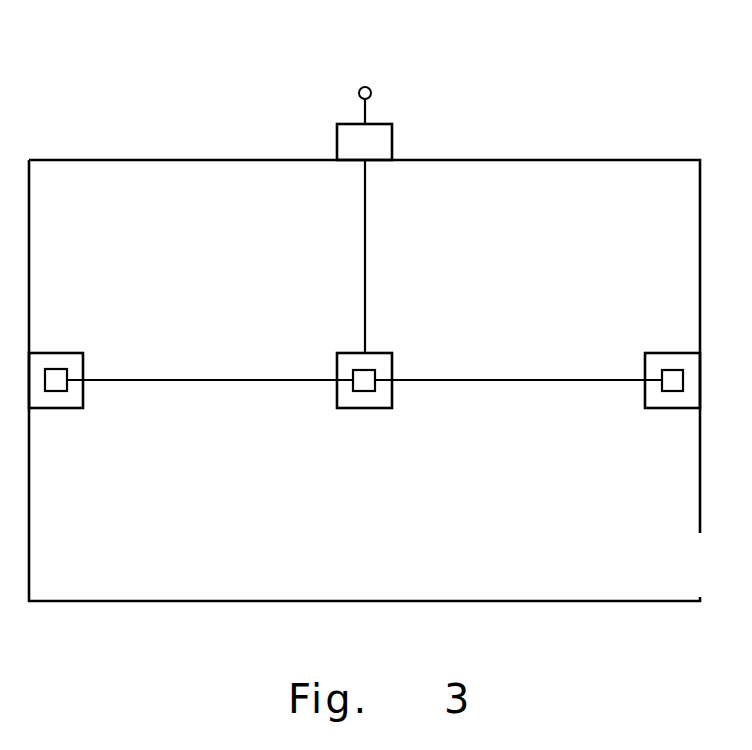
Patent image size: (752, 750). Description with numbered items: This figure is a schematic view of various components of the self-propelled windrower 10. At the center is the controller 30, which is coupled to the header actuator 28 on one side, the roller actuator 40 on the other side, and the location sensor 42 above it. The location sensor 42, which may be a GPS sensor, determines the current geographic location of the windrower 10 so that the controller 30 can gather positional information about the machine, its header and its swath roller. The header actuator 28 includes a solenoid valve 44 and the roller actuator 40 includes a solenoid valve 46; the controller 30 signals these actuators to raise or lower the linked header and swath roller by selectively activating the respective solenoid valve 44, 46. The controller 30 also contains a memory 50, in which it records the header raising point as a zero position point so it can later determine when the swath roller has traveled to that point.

The windrower 10 is at (613, 108).
The header actuator 28 is at (60, 353).
The controller 30 is at (382, 353).
The roller actuator 40 is at (660, 353).
The location sensor 42 is at (392, 130).
The solenoid valve 44 is at (57, 391).
The solenoid valve 46 is at (672, 391).
The memory 50 is at (367, 391).